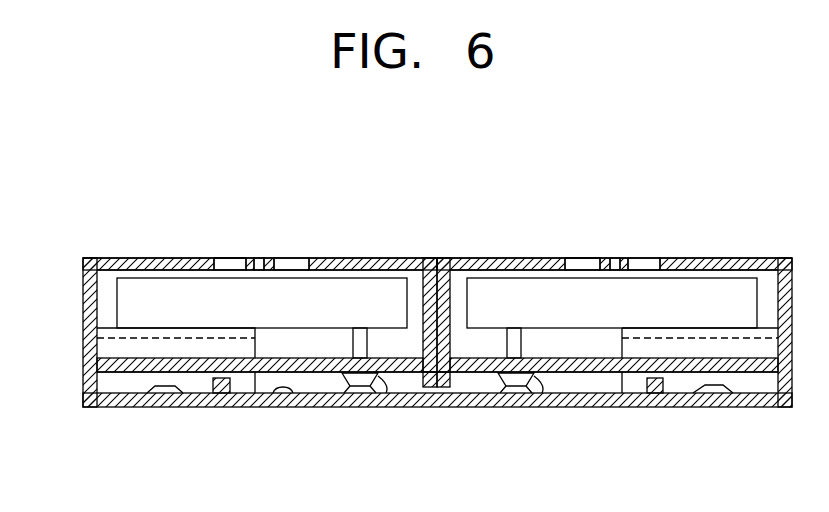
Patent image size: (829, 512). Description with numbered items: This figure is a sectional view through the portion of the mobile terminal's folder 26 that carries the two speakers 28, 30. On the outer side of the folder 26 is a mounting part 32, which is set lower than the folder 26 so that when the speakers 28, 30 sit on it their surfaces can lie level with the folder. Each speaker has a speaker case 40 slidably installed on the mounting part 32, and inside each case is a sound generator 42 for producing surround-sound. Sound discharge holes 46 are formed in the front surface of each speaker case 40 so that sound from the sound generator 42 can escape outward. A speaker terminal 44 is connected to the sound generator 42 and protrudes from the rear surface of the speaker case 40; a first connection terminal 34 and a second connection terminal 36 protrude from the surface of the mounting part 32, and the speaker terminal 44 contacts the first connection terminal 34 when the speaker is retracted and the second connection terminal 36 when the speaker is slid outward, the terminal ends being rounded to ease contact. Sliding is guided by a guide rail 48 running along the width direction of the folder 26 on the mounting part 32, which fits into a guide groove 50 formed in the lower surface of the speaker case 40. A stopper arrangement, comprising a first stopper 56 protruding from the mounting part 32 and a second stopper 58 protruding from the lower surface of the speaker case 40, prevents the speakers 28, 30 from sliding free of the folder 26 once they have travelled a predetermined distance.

The folder 26 is at (748, 400).
The speaker 28 is at (152, 254).
The speaker 30 is at (750, 254).
The mounting part 32 is at (297, 390).
The first connection terminal 34 is at (360, 388).
The second connection terminal 36 is at (165, 390).
The speaker case 40 is at (383, 258).
The sound generator 42 is at (331, 288).
The speaker terminal 44 is at (381, 388).
The sound discharge hole 46 is at (232, 259).
The guide rail 48 is at (98, 332).
The guide groove 50 is at (98, 356).
The first stopper 56 is at (221, 393).
The second stopper 58 is at (433, 387).